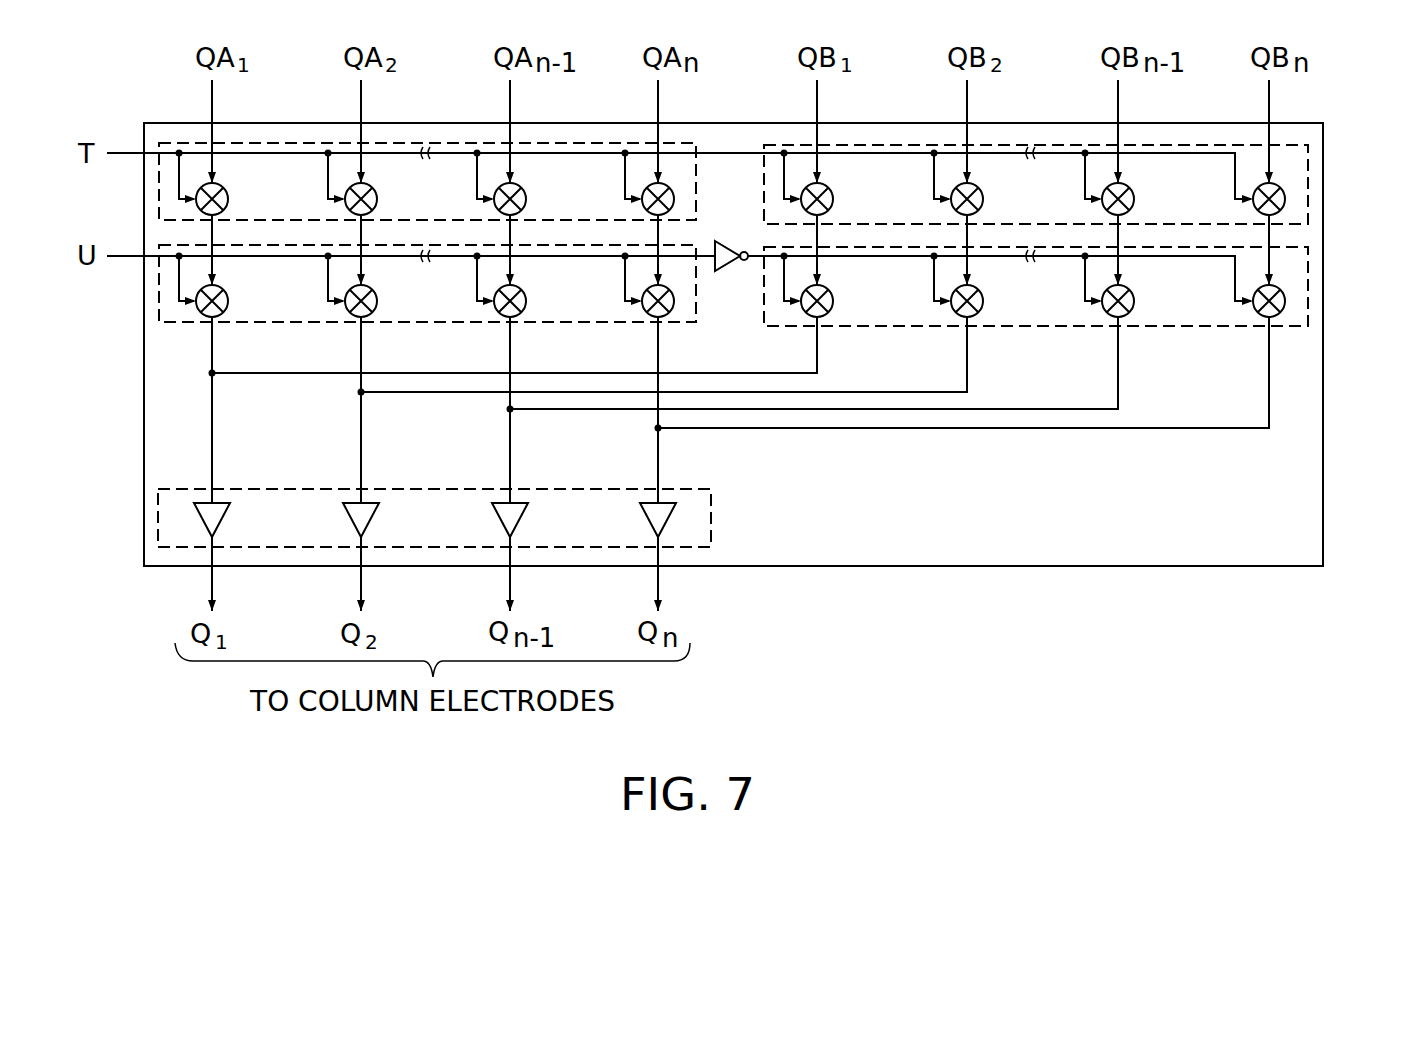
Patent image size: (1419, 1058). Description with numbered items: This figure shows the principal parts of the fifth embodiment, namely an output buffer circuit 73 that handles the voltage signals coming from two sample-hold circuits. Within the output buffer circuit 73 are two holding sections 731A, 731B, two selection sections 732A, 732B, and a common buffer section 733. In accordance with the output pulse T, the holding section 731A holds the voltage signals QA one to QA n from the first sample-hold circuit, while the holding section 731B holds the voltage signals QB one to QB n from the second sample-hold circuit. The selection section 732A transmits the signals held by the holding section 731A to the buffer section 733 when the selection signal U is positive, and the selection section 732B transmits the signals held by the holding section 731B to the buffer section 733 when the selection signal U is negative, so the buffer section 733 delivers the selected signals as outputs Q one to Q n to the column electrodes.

The output buffer circuit 73 is at (144, 440).
The holding section 731A is at (158, 190).
The holding section 731B is at (1310, 178).
The selection section 732A is at (158, 290).
The selection section 732B is at (1308, 296).
The common buffer section 733 is at (712, 532).